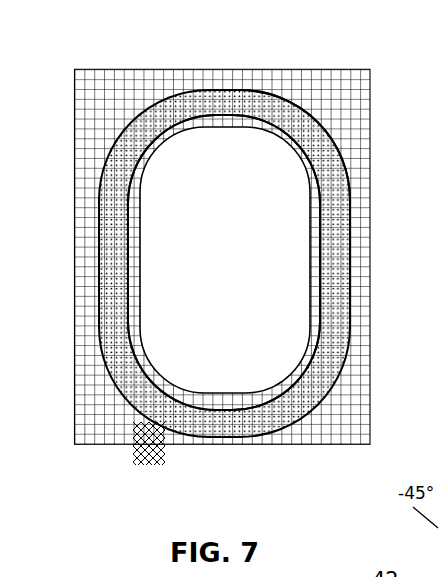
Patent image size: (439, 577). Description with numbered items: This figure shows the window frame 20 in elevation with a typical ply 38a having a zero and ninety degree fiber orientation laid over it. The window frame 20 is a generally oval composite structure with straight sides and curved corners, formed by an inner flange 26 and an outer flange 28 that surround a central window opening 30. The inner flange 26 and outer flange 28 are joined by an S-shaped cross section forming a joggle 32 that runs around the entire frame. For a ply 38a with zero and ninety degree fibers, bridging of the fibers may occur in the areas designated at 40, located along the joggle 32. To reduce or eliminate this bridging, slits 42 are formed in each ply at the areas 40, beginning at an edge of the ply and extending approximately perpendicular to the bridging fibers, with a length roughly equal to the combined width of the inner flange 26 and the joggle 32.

The window frame 20 is at (226, 256).
The inner flange 26 is at (200, 400).
The outer flange 28 is at (340, 213).
The central window opening 30 is at (176, 180).
The joggle 32 is at (310, 137).
The ply 38a is at (110, 95).
The areas of fiber bridging 40 is at (212, 118).
The slits 42 is at (236, 110).